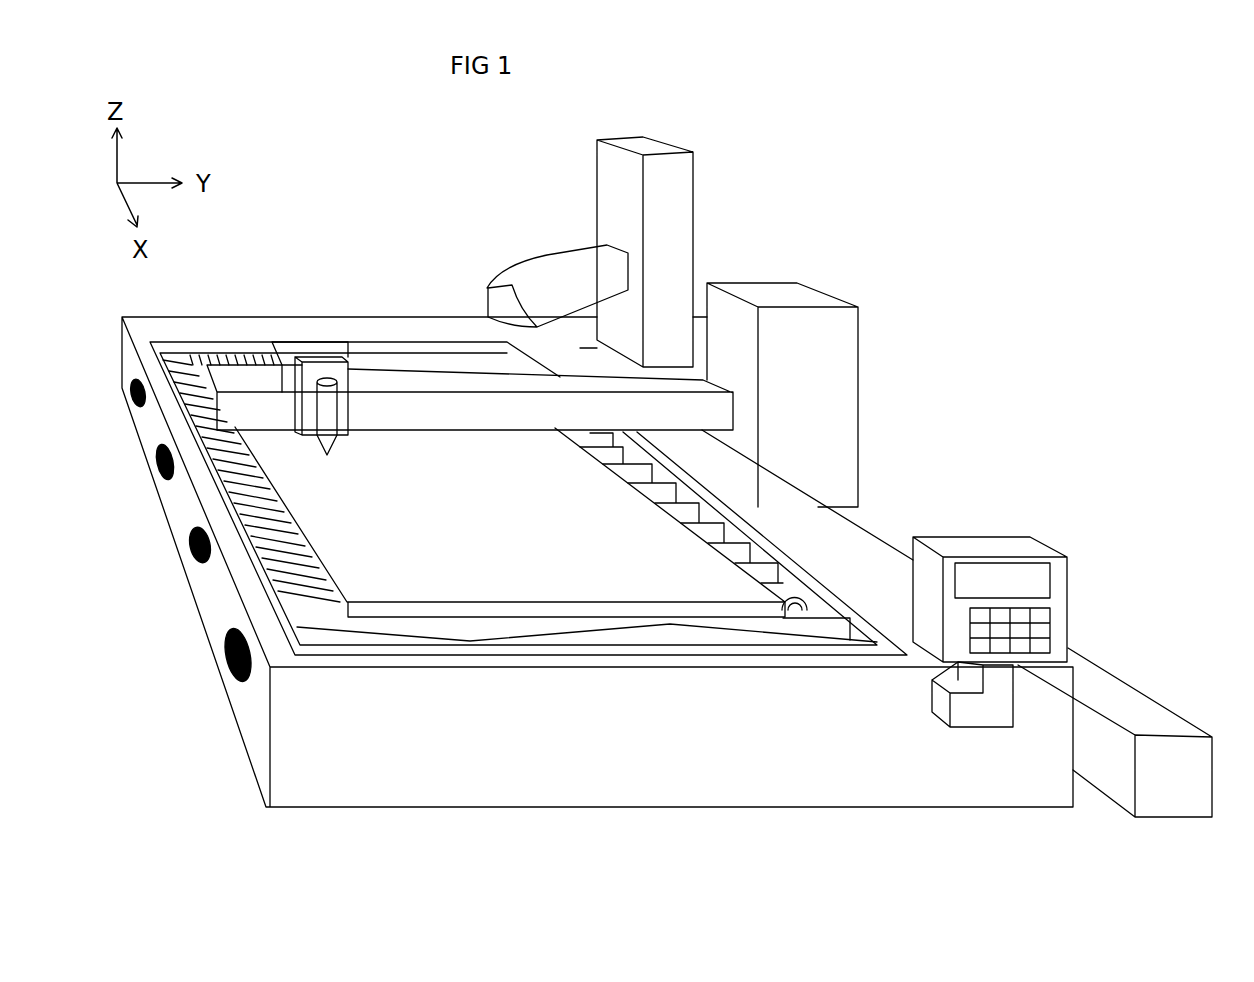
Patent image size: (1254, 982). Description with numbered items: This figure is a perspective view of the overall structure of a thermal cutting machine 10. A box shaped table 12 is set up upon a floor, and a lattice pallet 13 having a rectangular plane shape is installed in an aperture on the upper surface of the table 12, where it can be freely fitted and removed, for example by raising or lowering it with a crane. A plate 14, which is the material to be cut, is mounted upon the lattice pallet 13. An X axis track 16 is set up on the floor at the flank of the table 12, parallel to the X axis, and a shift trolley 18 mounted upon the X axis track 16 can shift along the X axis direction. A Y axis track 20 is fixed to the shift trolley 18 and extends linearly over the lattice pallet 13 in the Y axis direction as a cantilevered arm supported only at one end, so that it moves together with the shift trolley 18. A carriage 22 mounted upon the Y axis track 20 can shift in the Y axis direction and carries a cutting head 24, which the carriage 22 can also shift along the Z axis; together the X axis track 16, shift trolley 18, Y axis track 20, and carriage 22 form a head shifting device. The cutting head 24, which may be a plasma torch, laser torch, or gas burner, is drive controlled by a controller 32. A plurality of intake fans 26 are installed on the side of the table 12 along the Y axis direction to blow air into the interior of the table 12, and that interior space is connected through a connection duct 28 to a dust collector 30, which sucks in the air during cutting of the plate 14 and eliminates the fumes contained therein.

The thermal cutting machine 10 is at (378, 168).
The table 12 is at (385, 318).
The lattice pallet 13 is at (677, 652).
The plate 14 is at (475, 575).
The X axis track 16 is at (867, 533).
The shift trolley 18 is at (762, 277).
The Y axis track 20 is at (390, 375).
The carriage 22 is at (285, 345).
The cutting head 24 is at (315, 345).
The intake fans 26 is at (232, 655).
The connection duct 28 is at (547, 258).
The dust collector 30 is at (677, 190).
The controller 32 is at (1068, 583).